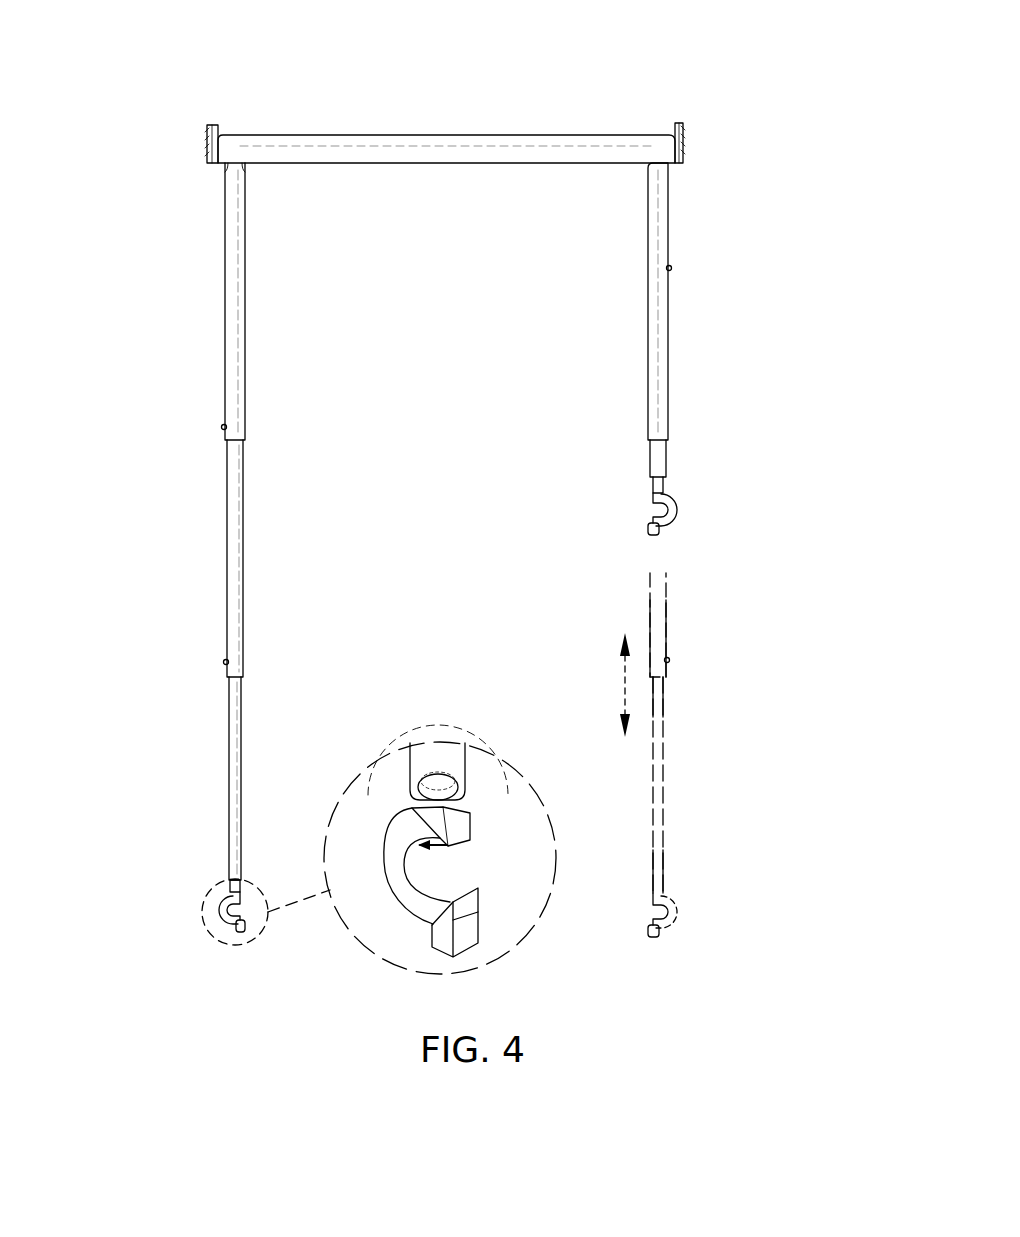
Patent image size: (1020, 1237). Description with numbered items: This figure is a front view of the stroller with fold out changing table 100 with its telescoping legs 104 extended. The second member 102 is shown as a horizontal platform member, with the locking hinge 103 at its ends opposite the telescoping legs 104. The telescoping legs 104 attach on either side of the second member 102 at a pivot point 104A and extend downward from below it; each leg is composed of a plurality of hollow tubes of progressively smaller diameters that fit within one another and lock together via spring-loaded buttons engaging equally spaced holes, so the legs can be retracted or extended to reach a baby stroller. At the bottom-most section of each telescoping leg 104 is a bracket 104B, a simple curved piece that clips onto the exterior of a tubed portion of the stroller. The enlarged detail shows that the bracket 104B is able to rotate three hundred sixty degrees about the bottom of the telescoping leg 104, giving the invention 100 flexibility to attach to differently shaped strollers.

The stroller with fold out changing table 100 is at (689, 78).
The second member 102 is at (333, 135).
The locking hinge 103 is at (218, 126).
The telescoping legs 104 is at (172, 893).
The pivot point 104A is at (232, 157).
The bracket 104B is at (220, 918).